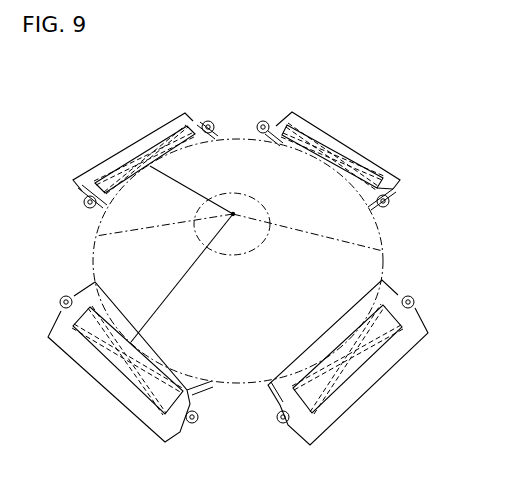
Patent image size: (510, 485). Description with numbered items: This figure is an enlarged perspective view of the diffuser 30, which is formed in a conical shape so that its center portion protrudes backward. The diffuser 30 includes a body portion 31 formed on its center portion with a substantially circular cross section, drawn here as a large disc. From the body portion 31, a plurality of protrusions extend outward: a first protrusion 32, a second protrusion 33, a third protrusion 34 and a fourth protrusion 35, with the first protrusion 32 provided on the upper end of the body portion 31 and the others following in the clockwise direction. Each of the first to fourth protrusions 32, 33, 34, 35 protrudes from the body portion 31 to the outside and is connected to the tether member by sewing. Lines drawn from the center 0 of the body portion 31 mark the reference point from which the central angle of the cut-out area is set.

The diffuser 30 is at (316, 87).
The body portion 31 is at (319, 272).
The first protrusion 32 is at (347, 148).
The second protrusion 33 is at (367, 391).
The third protrusion 34 is at (100, 382).
The fourth protrusion 35 is at (132, 140).
The center of the body portion 0 is at (233, 214).